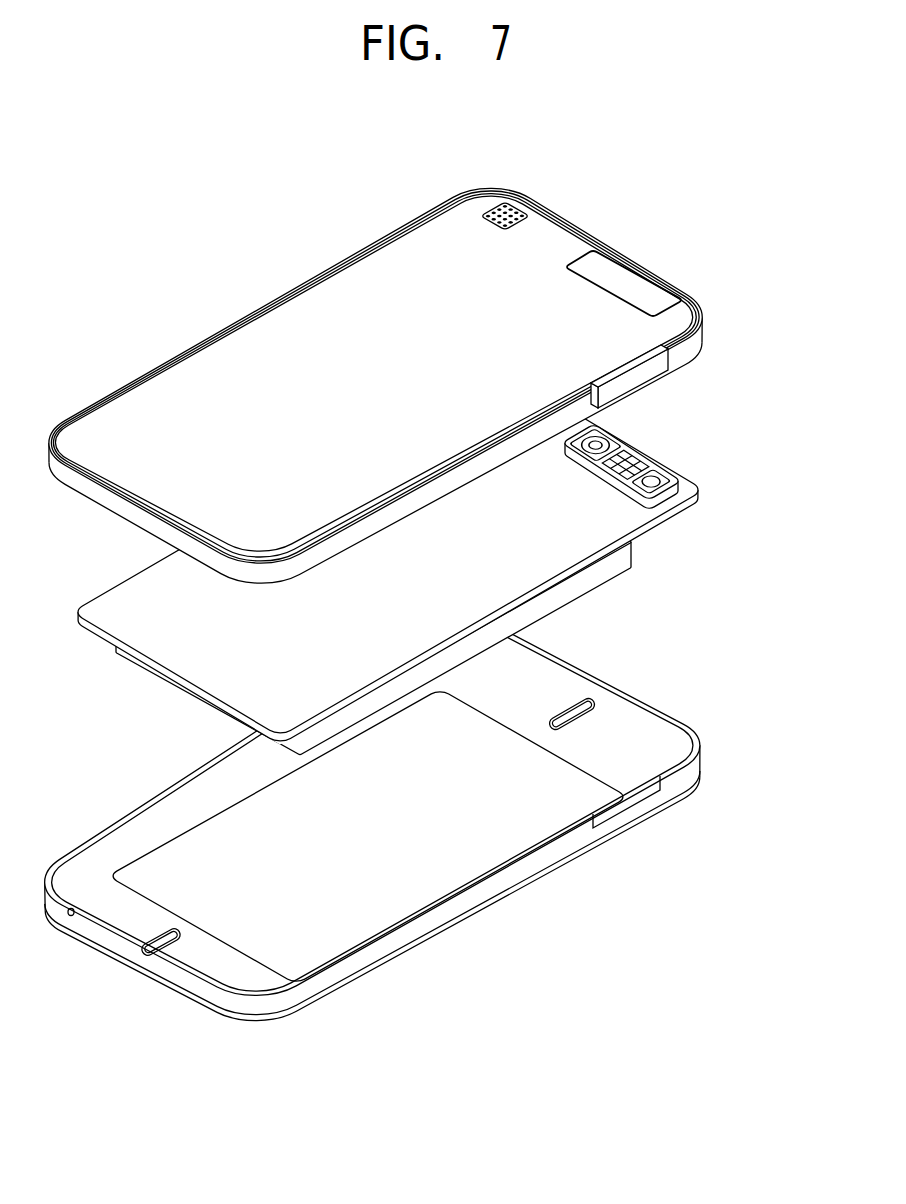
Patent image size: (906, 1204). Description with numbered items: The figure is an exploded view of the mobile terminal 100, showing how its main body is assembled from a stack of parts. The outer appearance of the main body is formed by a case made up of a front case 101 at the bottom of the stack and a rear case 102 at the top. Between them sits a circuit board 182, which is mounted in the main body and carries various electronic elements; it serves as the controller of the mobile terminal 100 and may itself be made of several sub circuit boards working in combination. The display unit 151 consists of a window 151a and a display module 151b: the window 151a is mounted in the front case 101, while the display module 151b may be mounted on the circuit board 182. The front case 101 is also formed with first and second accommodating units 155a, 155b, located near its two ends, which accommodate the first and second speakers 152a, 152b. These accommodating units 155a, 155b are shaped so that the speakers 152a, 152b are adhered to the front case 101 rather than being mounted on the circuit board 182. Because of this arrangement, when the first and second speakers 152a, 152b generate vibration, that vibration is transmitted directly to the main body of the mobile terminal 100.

The mobile terminal 100 is at (340, 230).
The front case 101 is at (393, 834).
The rear case 102 is at (694, 330).
The display unit 151 is at (436, 562).
The window 151a is at (472, 717).
The display module 151b is at (602, 573).
The first speaker 152a is at (163, 948).
The second speaker 152b is at (582, 715).
The first accommodating unit 155a is at (186, 961).
The second accommodating unit 155b is at (594, 728).
The circuit board 182 is at (690, 492).